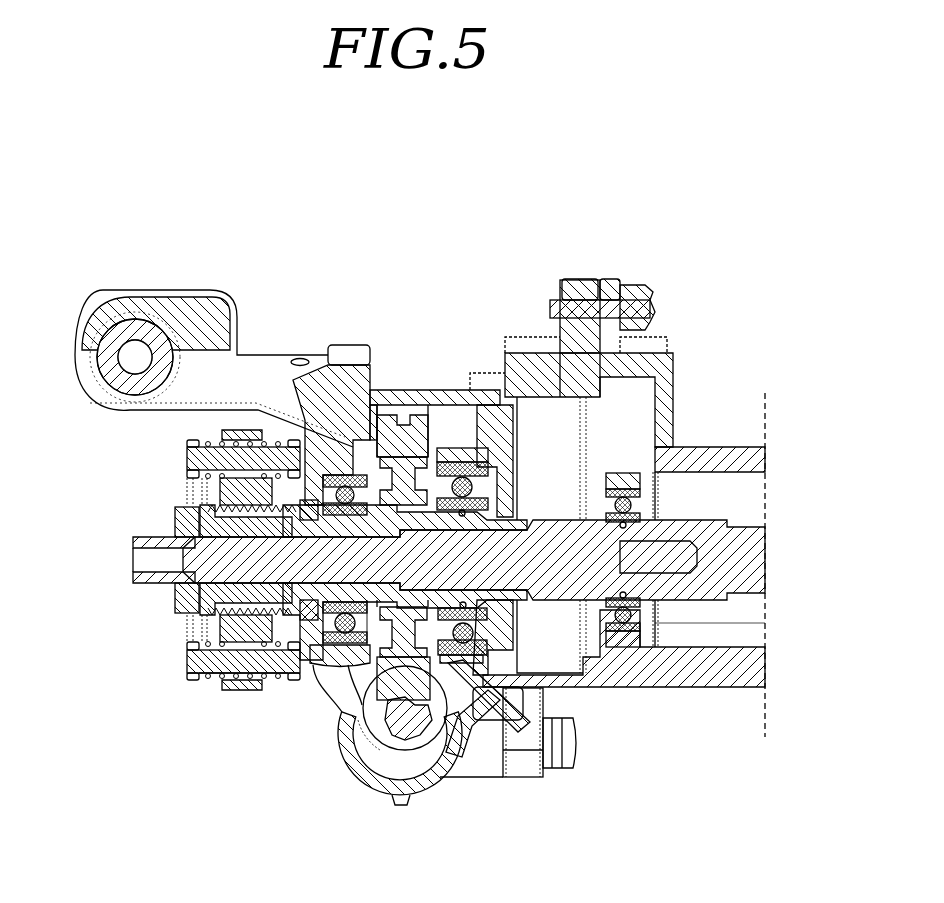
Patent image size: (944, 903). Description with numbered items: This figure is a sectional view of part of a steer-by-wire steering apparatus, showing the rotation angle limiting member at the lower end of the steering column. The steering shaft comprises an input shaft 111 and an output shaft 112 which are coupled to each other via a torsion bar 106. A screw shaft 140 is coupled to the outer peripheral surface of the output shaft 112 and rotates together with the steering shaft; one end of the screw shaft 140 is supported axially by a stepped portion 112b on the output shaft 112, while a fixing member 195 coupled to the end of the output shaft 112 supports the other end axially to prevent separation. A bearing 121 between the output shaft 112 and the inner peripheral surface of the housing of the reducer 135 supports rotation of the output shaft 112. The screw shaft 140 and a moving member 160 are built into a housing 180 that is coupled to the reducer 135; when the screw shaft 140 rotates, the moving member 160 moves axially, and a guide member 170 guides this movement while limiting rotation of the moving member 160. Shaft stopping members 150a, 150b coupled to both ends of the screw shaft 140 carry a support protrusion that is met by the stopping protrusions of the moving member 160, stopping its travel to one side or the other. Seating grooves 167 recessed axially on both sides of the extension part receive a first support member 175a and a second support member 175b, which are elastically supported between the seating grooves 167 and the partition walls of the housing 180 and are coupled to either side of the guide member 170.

The torsion bar 106 is at (674, 565).
The input shaft 111 is at (750, 548).
The output shaft 112 is at (143, 581).
The stepped portion 112b is at (347, 472).
The bearing 121 is at (343, 648).
The reducer 135 is at (363, 793).
The screw shaft 140 is at (243, 508).
The shaft stopping member 150a is at (297, 527).
The shaft stopping member 150b is at (206, 495).
The moving member 160 is at (225, 430).
The seating groove 167 is at (248, 691).
The guide member 170 is at (196, 661).
The first support member 175a is at (215, 680).
The second support member 175b is at (280, 680).
The housing 180 is at (182, 672).
The fixing member 195 is at (176, 523).